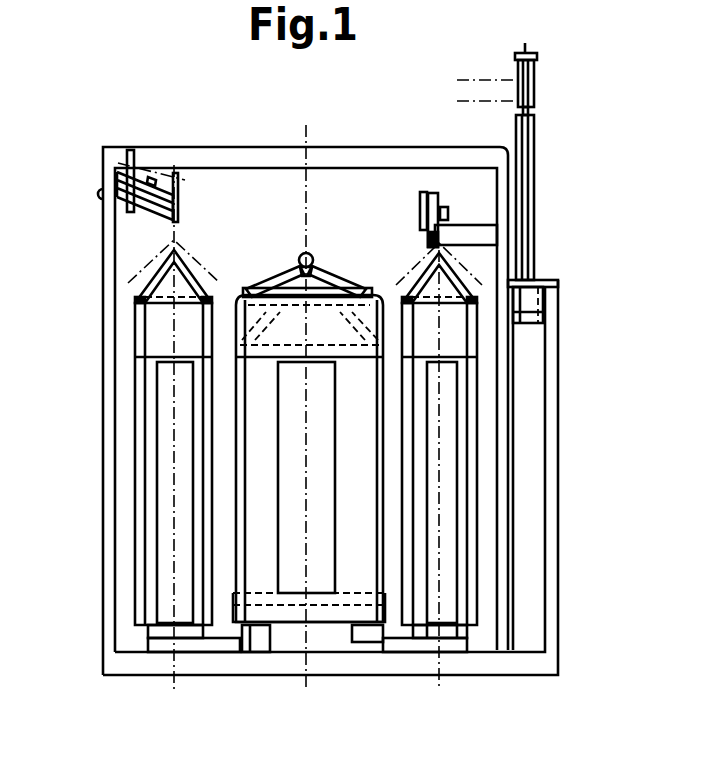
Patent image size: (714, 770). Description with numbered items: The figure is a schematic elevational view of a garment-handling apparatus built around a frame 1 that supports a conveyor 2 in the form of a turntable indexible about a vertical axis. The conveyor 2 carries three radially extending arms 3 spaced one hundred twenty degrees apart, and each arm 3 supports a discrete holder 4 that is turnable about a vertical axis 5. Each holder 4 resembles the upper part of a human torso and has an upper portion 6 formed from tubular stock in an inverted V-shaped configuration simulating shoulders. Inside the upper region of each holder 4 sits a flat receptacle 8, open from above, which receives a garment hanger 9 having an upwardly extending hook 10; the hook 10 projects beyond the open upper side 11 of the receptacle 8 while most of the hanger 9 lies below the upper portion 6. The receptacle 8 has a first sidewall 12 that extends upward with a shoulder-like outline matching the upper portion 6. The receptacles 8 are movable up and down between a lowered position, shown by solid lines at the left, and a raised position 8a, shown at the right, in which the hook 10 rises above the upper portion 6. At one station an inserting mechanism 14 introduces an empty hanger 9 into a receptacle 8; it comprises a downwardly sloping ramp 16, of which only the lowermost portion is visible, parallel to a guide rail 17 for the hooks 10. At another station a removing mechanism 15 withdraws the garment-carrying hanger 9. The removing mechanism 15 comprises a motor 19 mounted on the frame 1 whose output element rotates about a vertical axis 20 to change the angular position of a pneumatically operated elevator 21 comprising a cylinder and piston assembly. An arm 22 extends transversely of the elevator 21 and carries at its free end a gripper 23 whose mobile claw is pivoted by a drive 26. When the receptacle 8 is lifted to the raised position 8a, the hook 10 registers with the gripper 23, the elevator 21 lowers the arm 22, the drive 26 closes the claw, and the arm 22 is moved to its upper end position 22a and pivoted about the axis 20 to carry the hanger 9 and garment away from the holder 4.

The frame 1 is at (103, 335).
The conveyor 2 is at (262, 592).
The arms 3 is at (225, 645).
The holder 4 is at (135, 395).
The vertical axes 5 is at (172, 452).
The upper portion 6 is at (190, 272).
The receptacle 8 is at (135, 297).
The raised position 8a is at (148, 262).
The garment hanger 9 is at (340, 325).
The hook 10 is at (312, 258).
The open upper side 11 is at (337, 282).
The first sidewall 12 is at (300, 266).
The inserting mechanism 14 is at (185, 188).
The removing mechanism 15 is at (552, 188).
The ramp 16 is at (105, 198).
The guide rail 17 is at (130, 150).
The motor 19 is at (535, 322).
The vertical axis 20 is at (534, 124).
The elevator 21 is at (537, 93).
The arm 22 is at (477, 225).
The upper end position 22a is at (490, 77).
The gripper 23 is at (432, 192).
The drive 26 is at (422, 203).